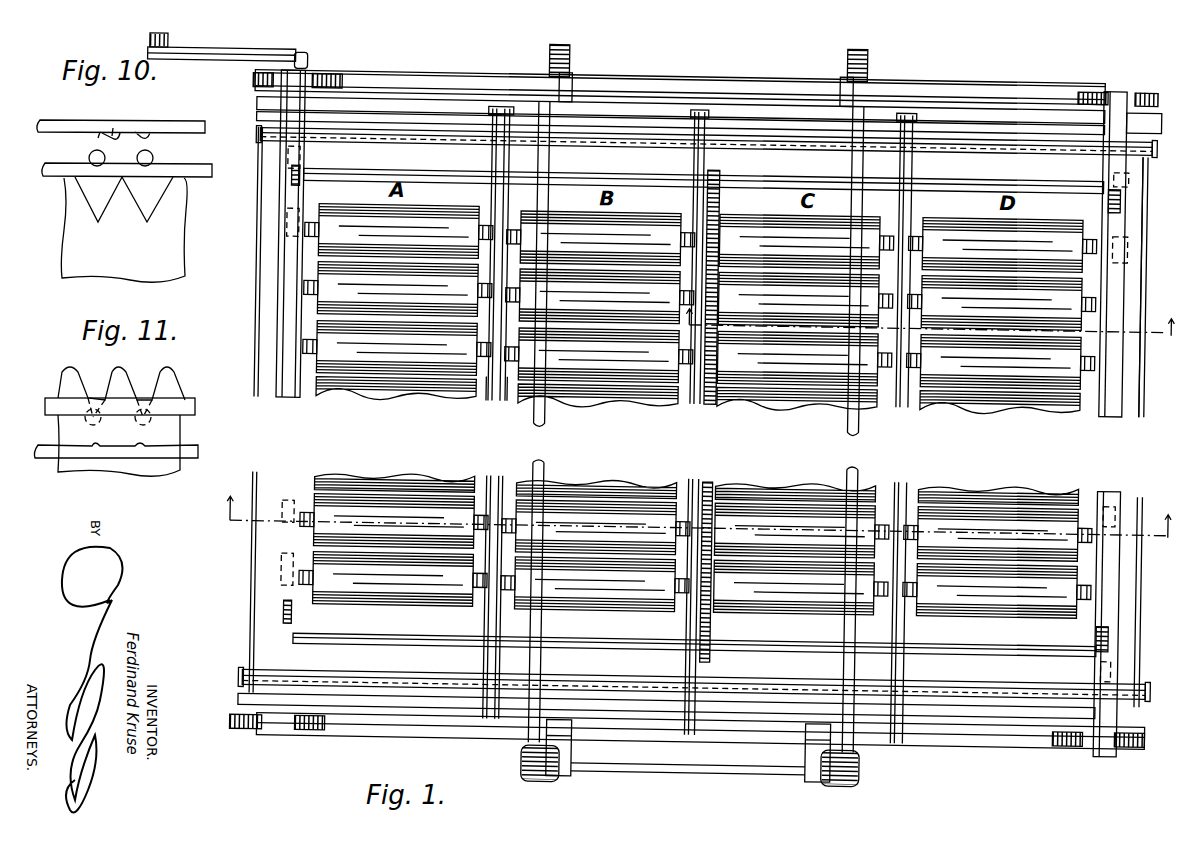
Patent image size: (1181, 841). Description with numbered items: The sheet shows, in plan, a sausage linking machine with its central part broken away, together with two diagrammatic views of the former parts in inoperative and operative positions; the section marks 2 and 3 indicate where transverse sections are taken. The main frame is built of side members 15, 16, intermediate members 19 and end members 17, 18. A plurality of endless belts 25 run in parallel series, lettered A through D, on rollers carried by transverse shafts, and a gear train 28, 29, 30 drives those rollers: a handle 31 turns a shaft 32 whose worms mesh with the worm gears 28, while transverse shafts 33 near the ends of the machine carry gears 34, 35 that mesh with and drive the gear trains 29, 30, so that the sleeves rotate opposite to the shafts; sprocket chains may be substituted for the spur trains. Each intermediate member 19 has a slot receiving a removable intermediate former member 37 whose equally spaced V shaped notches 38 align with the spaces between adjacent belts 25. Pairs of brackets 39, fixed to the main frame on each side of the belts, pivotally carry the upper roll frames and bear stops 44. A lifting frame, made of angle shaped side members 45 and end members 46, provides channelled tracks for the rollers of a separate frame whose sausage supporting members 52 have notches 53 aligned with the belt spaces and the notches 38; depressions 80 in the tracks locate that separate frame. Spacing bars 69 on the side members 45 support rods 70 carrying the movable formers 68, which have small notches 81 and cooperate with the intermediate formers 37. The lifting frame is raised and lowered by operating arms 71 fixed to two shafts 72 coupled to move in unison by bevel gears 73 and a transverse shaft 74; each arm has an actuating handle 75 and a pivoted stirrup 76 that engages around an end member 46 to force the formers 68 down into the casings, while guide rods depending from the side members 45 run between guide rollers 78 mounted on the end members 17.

In FIG. 1, the section line 2- 2 is at (928, 332).
In FIG. 1, the section line 3- 3 is at (699, 517).
In FIG. 1, the side member 15 is at (298, 402).
In FIG. 1, the side member 16 is at (1108, 470).
In FIG. 1, the end member 17 is at (680, 110).
In FIG. 1, the end member 18 is at (1018, 718).
In FIG. 1, the intermediate member 19 is at (497, 110).
In FIG. 1, the endless belt 25 is at (742, 490).
In FIG. 1, the worm gear 28 is at (284, 225).
In FIG. 1, the gear train 29 is at (714, 624).
In FIG. 1, the gear train 30 is at (1112, 490).
In FIG. 1, the handle 31 is at (220, 68).
In FIG. 1, the shaft 32 is at (302, 64).
In FIG. 1, the shaft 33 is at (400, 175).
In FIG. 1, the gear 34 is at (722, 175).
In FIG. 1, the gear 35 is at (1125, 172).
In FIG. 10, the intermediate former member 37 is at (170, 246).
In FIG. 11, the intermediate former member 37 is at (172, 437).
In FIG. 1, the intermediate former member 37 is at (505, 118).
In FIG. 10, the V shaped notch 38 is at (98, 212).
In FIG. 1, the bracket 39 is at (290, 280).
In FIG. 1, the stop 44 is at (487, 356).
In FIG. 1, the side member 45 is at (292, 386).
In FIG. 1, the end member 46 is at (415, 77).
In FIG. 10, the sausage supporting member 52 is at (196, 166).
In FIG. 11, the sausage supporting member 52 is at (190, 462).
In FIG. 10, the notch 53 is at (90, 158).
In FIG. 11, the notch 53 is at (140, 450).
In FIG. 10, the movable former 68 is at (175, 124).
In FIG. 11, the movable former 68 is at (190, 400).
In FIG. 1, the spacing bar 69 is at (1143, 310).
In FIG. 1, the rod 70 is at (340, 145).
In FIG. 1, the operating arm 71 is at (860, 68).
In FIG. 1, the shaft 72 is at (545, 424).
In FIG. 1, the bevel gear 73 is at (528, 756).
In FIG. 1, the transverse shaft 74 is at (705, 773).
In FIG. 1, the actuating handle 75 is at (564, 60).
In FIG. 1, the stirrup 76 is at (568, 86).
In FIG. 1, the guide roller 78 is at (1125, 746).
In FIG. 1, the depression 80 is at (296, 184).
In FIG. 10, the notch 81 is at (128, 134).